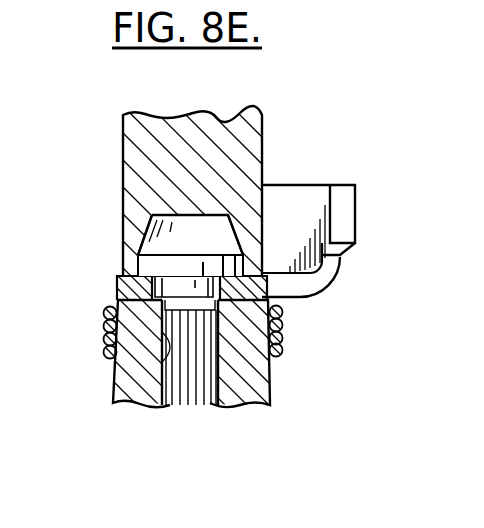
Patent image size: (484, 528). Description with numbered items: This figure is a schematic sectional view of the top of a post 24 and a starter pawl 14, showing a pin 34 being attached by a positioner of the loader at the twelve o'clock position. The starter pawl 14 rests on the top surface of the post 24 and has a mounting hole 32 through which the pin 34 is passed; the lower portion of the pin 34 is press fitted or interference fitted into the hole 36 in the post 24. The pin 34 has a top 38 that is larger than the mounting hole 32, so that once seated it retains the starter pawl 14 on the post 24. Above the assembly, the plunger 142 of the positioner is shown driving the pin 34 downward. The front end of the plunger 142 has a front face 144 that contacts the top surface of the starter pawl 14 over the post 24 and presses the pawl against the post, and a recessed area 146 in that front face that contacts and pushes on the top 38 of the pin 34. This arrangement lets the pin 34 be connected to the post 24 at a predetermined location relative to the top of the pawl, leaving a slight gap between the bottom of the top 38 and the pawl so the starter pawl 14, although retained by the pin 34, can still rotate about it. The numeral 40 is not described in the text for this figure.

The plunger 142 is at (123, 140).
The recessed area 146 is at (152, 216).
The top 38 is at (160, 264).
The mounting hole 32 is at (117, 285).
The spring coils 40 is at (104, 327).
The hole 36 is at (167, 353).
The pin 34 is at (196, 400).
The post 24 is at (270, 378).
The starter pawl 14 is at (313, 298).
The front face 144 is at (275, 273).